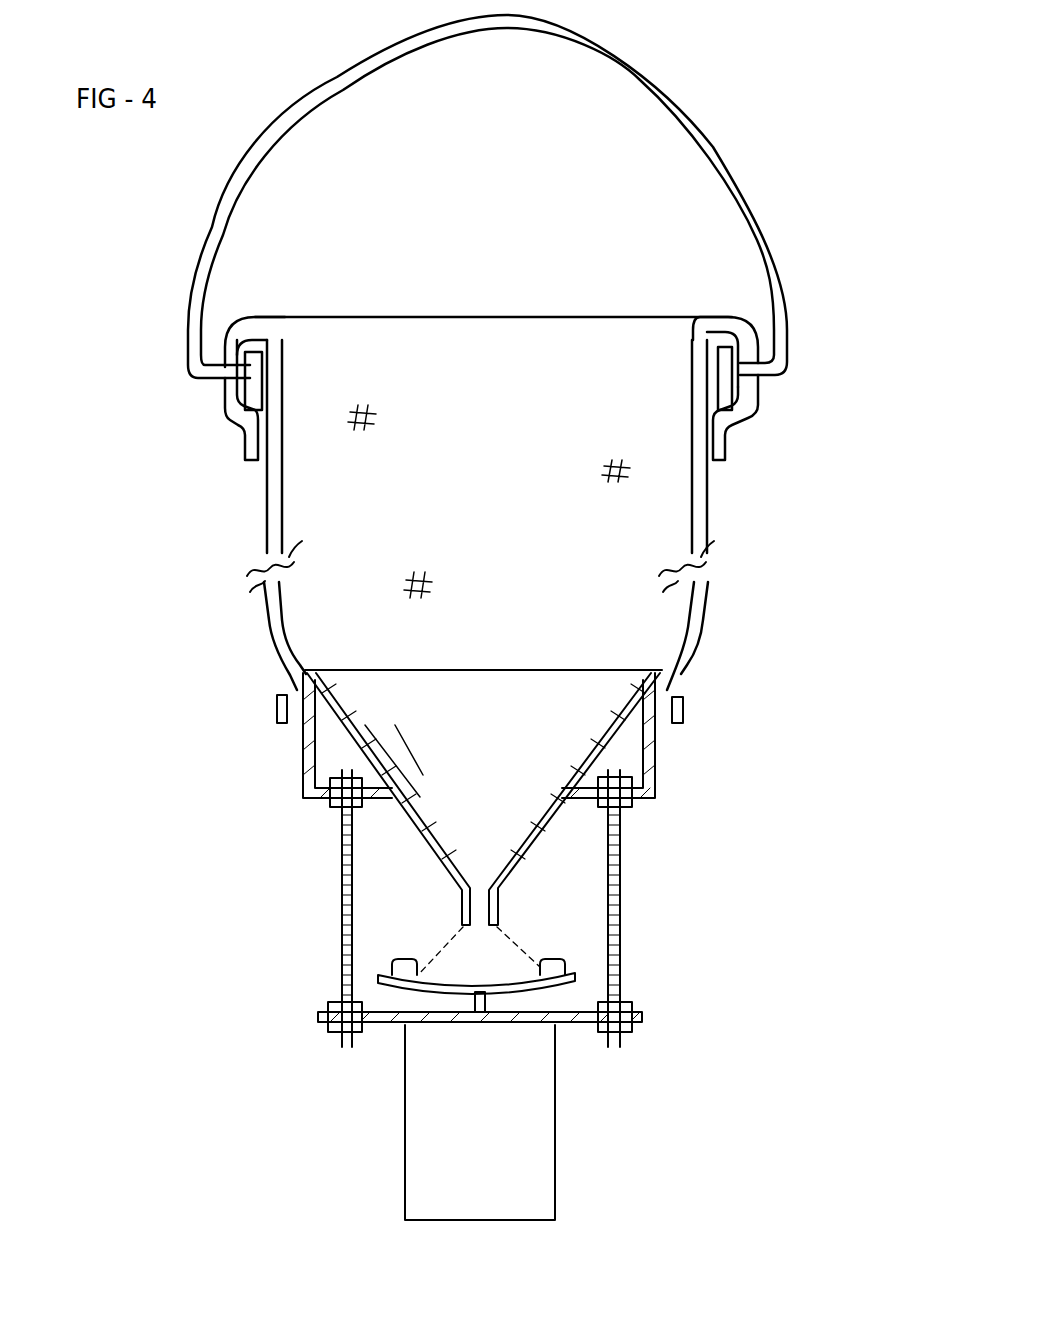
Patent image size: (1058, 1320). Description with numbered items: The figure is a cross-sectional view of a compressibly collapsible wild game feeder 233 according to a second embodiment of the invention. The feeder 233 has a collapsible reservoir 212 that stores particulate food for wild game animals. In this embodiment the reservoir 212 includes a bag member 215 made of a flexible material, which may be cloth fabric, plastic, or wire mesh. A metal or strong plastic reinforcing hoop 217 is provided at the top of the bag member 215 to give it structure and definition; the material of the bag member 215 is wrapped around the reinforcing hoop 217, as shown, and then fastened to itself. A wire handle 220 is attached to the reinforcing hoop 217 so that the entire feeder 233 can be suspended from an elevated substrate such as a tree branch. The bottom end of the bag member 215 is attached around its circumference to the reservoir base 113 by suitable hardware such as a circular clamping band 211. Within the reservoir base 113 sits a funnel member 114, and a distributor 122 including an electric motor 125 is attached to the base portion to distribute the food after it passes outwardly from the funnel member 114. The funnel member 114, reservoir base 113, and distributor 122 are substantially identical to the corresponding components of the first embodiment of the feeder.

The wire handle 220 is at (605, 58).
The reinforcing hoop 217 is at (733, 390).
The bag member 215 is at (707, 507).
The collapsible reservoir 212 is at (238, 543).
The circular clamping band 211 is at (683, 708).
The reservoir base 113 is at (657, 762).
The funnel member 114 is at (503, 750).
The compressibly collapsible wild game feeder 233 is at (235, 840).
The distributor 122 is at (680, 997).
The electric motor 125 is at (498, 1136).